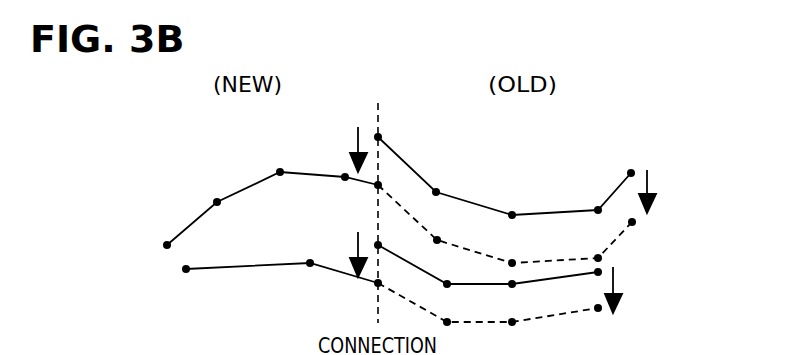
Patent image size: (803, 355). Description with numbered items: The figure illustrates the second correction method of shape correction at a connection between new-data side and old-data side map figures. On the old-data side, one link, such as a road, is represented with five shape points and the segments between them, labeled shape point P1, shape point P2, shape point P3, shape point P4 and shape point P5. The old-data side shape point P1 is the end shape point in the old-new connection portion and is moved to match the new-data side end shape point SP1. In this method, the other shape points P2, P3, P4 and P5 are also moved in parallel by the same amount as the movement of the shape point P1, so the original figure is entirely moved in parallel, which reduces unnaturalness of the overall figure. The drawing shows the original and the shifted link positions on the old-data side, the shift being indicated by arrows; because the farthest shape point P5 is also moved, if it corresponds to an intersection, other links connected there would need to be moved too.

The new-data side shape point SP1 is at (377, 185).
The old-data side shape point P1 is at (379, 134).
The shape point P2 is at (436, 188).
The shape point P3 is at (512, 211).
The shape point P4 is at (598, 207).
The farthest shape point P5 is at (631, 170).